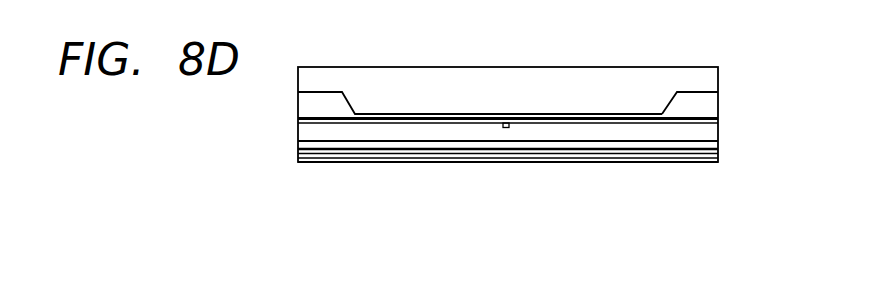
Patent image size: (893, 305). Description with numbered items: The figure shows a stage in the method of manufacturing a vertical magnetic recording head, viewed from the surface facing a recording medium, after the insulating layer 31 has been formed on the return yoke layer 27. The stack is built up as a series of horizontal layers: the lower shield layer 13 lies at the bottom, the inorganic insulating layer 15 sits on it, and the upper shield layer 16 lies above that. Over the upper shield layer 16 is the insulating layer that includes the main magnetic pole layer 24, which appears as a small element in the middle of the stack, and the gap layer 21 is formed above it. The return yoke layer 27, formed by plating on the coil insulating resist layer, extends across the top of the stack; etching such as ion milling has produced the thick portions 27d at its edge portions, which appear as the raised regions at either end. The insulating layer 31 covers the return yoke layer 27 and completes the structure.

The lower shield layer 13 is at (298, 163).
The inorganic insulating layer 15 is at (298, 153).
The upper shield layer 16 is at (298, 148).
The gap layer 21 is at (388, 114).
The main magnetic pole layer 24 is at (507, 128).
The return yoke layer 27 is at (490, 114).
The thick portions 27d is at (695, 102).
The insulating layer 31 is at (606, 88).